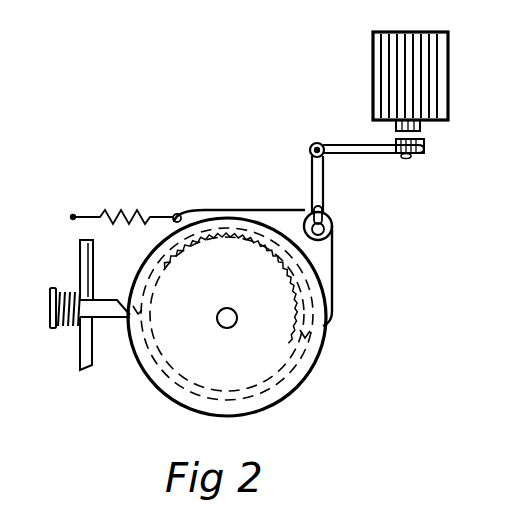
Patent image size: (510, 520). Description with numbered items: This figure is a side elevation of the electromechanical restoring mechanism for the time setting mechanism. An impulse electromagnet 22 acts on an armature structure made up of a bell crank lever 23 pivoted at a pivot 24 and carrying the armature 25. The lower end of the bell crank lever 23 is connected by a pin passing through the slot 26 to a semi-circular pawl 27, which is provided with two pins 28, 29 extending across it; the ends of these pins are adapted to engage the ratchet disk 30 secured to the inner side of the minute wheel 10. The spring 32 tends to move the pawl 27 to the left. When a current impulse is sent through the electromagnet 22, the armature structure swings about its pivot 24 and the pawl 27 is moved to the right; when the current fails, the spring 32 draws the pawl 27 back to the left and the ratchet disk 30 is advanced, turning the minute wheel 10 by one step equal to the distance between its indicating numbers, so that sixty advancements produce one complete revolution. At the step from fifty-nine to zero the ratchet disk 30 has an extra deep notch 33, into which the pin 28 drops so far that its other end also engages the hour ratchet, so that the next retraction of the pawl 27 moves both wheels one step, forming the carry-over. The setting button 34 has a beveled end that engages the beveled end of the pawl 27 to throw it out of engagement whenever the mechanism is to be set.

The minute wheel 10 is at (290, 396).
The electromagnet 22 is at (373, 70).
The bell crank lever 23 is at (325, 181).
The pivot 24 is at (314, 144).
The armature 25 is at (425, 147).
The slot 26 is at (333, 216).
The semi-circular pawl 27 is at (270, 210).
The pin 28 is at (238, 237).
The pin 29 is at (327, 322).
The ratchet disk 30 is at (278, 258).
The spring 32 is at (129, 213).
The extra deep notch 33 is at (296, 290).
The setting button 34 is at (50, 313).